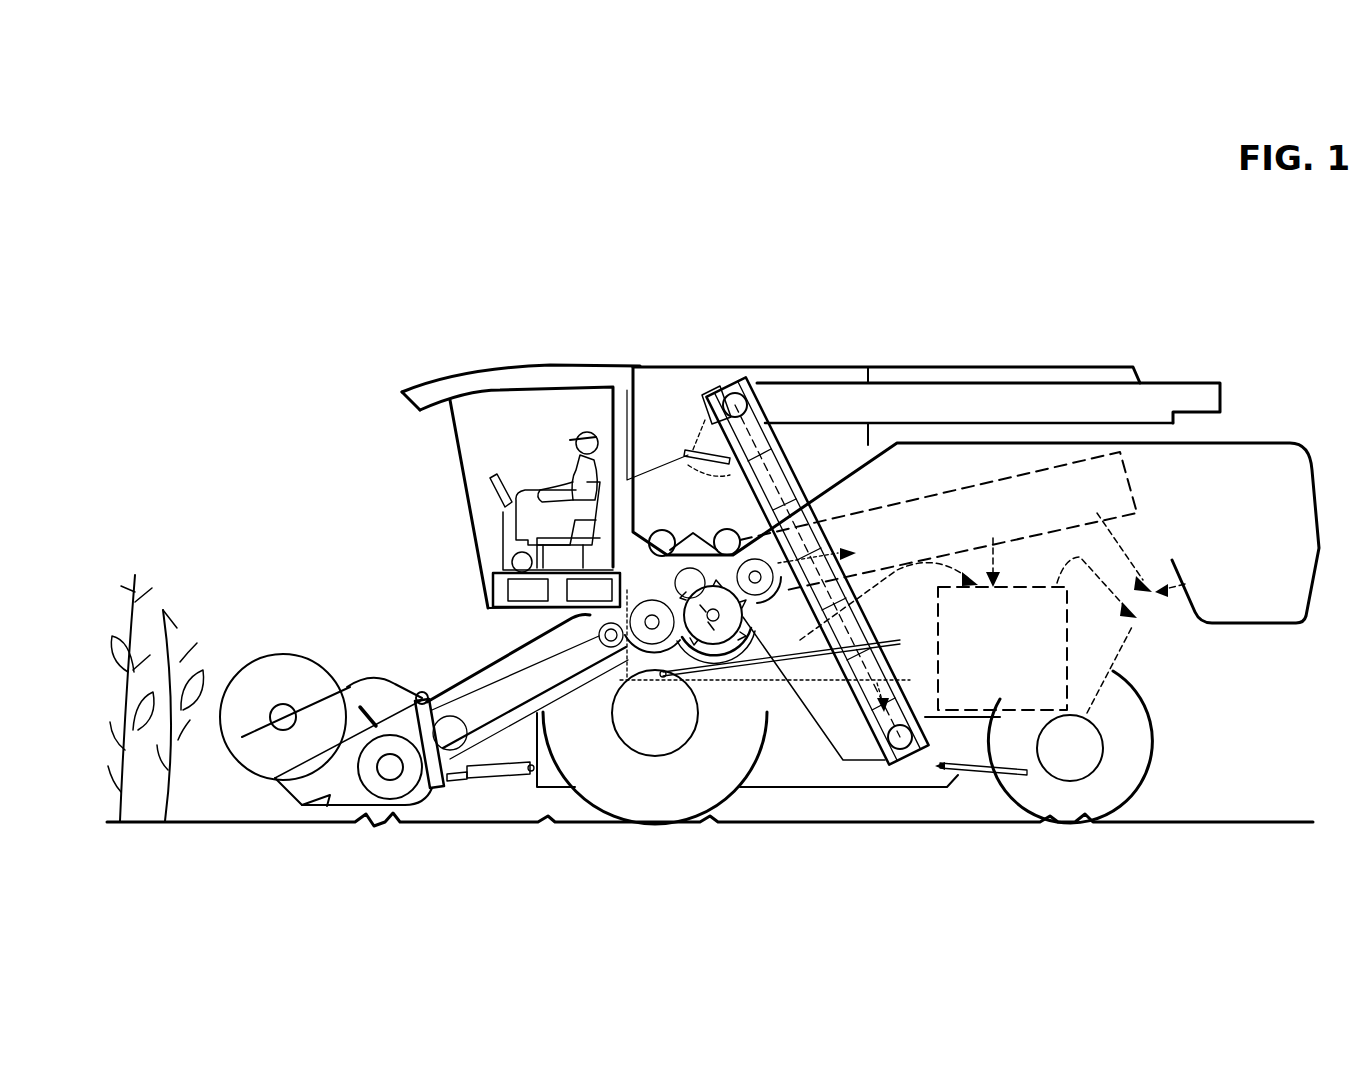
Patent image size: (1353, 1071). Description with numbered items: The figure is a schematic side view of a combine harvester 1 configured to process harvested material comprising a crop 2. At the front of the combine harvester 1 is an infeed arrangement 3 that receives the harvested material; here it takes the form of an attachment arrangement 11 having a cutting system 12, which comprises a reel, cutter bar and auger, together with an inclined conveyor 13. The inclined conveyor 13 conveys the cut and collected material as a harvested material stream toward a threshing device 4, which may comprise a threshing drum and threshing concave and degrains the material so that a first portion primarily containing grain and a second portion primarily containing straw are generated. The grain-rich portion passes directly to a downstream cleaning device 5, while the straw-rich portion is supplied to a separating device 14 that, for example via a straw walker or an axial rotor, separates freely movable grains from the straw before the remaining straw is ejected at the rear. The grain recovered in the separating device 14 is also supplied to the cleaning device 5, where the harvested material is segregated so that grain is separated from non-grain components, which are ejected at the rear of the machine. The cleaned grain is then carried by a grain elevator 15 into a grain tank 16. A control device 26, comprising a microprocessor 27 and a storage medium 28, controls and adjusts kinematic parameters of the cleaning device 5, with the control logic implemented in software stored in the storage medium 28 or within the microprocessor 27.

The combine harvester 1 is at (255, 215).
The crop 2 is at (176, 557).
The infeed arrangement 3 is at (445, 650).
The threshing device 4 is at (718, 704).
The cleaning device 5 is at (1017, 653).
The attachment arrangement 11 is at (275, 633).
The cutting system 12 is at (323, 807).
The inclined conveyor 13 is at (530, 688).
The separating device 14 is at (1000, 495).
The grain elevator 15 is at (800, 400).
The grain tank 16 is at (667, 403).
The control device 26 is at (487, 572).
The microprocessor 27 is at (528, 590).
The storage medium 28 is at (589, 590).